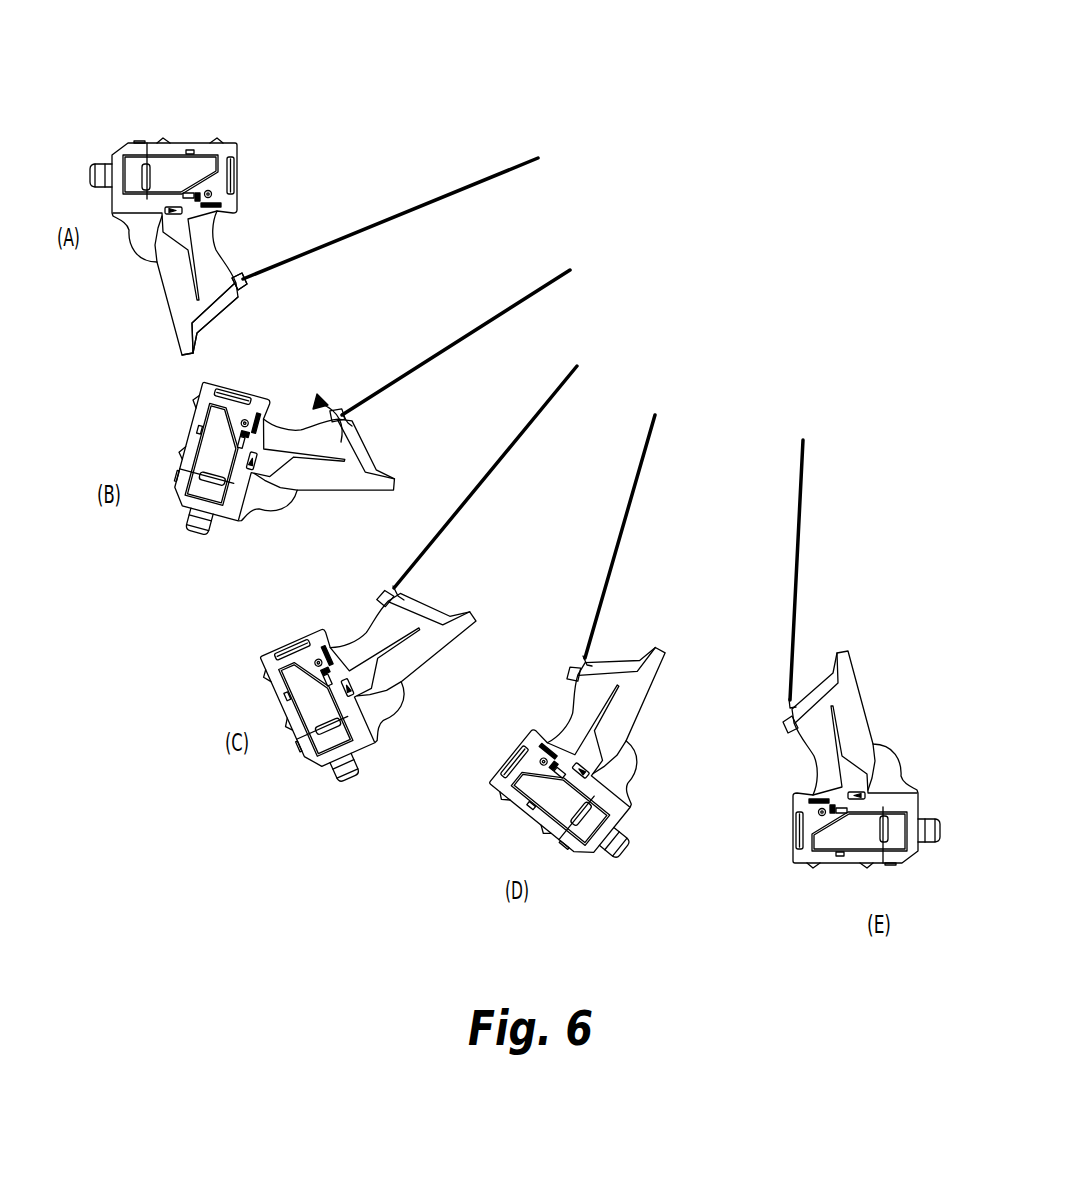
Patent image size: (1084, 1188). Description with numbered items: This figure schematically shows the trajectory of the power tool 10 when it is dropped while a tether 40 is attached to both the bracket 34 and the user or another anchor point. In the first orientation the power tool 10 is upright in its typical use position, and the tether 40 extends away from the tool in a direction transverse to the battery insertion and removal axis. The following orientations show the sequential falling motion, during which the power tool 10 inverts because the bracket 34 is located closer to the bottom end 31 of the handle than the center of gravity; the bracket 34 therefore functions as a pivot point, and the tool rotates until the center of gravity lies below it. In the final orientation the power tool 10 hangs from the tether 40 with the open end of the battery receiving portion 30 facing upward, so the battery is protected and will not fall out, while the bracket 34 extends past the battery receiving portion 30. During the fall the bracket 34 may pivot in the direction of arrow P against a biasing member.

The power tool 10 is at (224, 71).
The battery receiving portion 30 is at (829, 664).
The bottom end 31 is at (221, 318).
The bracket 34 is at (240, 280).
The tether 40 is at (377, 220).
The arrow P is at (328, 430).